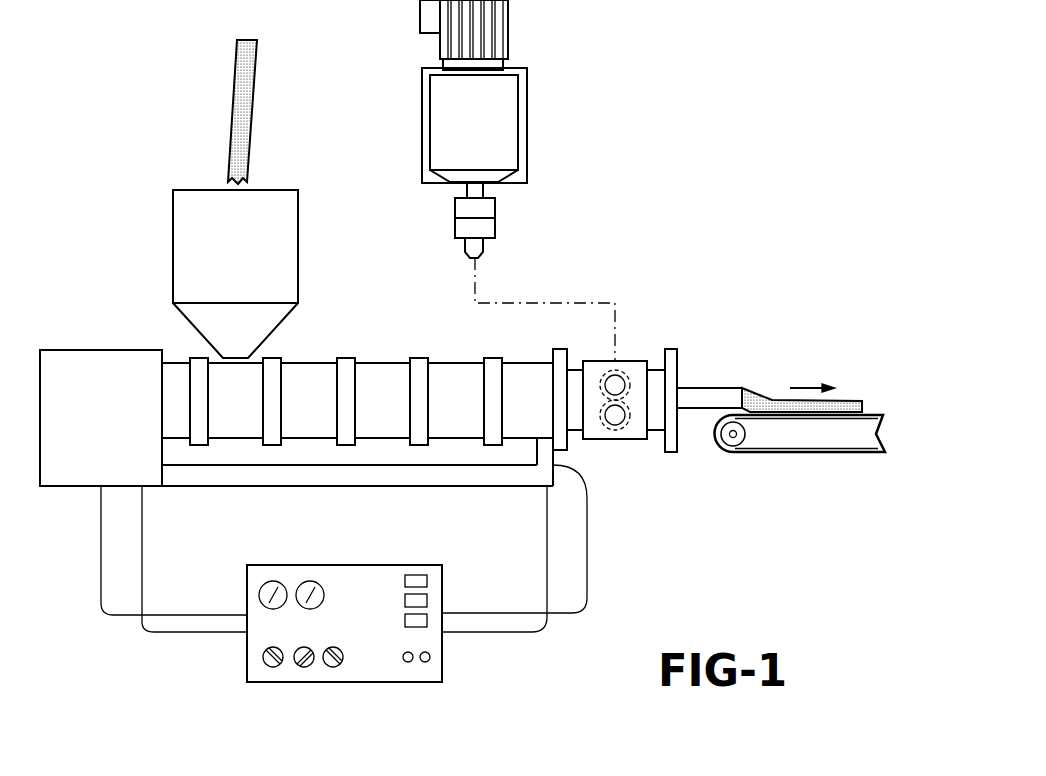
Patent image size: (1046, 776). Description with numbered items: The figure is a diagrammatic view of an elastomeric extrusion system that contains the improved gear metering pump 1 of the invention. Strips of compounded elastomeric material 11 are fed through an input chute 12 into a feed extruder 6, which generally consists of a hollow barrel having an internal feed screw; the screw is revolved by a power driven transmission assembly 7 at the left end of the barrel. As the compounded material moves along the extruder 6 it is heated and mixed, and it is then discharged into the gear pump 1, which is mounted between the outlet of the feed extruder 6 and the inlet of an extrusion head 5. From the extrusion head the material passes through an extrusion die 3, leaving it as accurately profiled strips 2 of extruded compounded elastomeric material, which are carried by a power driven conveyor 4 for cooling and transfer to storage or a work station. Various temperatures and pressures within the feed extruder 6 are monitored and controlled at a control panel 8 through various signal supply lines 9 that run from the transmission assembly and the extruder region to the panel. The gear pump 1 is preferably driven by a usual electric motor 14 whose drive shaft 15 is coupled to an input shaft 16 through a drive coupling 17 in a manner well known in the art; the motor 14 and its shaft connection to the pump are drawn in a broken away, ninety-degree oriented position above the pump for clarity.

The gear metering pump 1 is at (604, 447).
The profiled strips 2 is at (848, 400).
The extrusion die 3 is at (693, 392).
The power driven conveyor 4 is at (797, 455).
The extrusion head 5 is at (655, 418).
The feed extruder 6 is at (380, 382).
The power driven transmission assembly 7 is at (82, 368).
The control panel 8 is at (430, 667).
The signal supply lines 9 is at (587, 587).
The compounded elastomeric material 11 is at (250, 88).
The input chute 12 is at (278, 268).
The electric motor 14 is at (495, 20).
The drive shaft 15 is at (463, 190).
The input shaft 16 is at (480, 248).
The drive coupling 17 is at (483, 188).